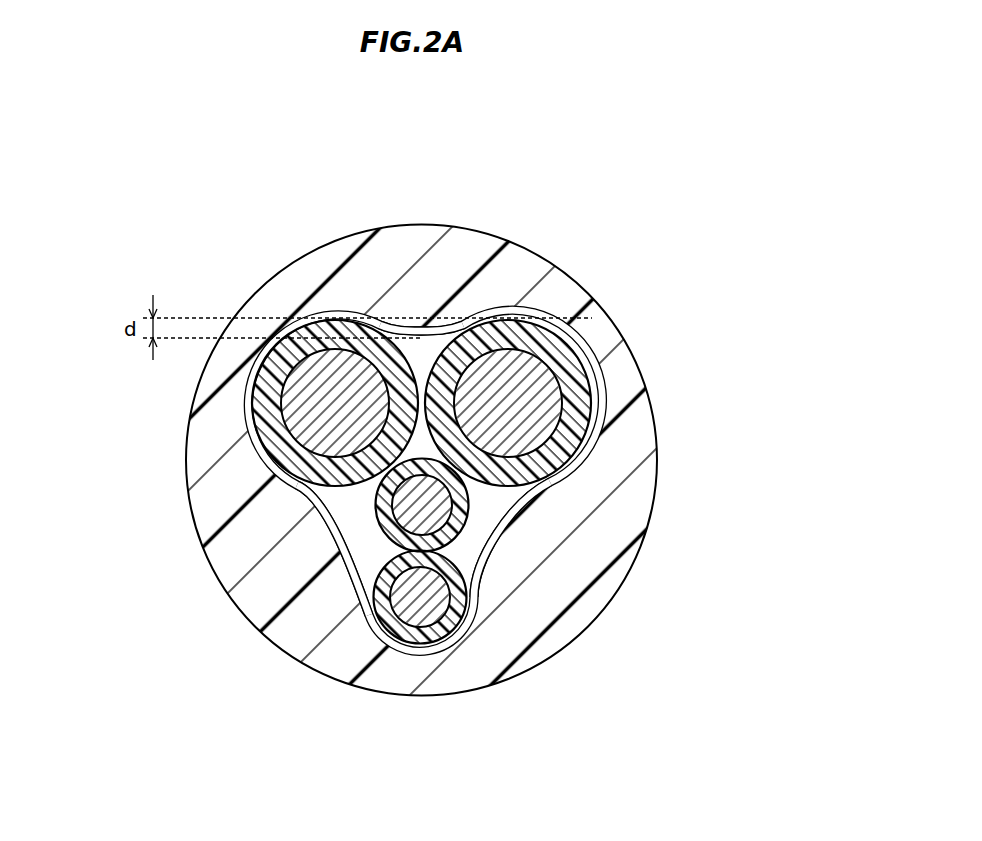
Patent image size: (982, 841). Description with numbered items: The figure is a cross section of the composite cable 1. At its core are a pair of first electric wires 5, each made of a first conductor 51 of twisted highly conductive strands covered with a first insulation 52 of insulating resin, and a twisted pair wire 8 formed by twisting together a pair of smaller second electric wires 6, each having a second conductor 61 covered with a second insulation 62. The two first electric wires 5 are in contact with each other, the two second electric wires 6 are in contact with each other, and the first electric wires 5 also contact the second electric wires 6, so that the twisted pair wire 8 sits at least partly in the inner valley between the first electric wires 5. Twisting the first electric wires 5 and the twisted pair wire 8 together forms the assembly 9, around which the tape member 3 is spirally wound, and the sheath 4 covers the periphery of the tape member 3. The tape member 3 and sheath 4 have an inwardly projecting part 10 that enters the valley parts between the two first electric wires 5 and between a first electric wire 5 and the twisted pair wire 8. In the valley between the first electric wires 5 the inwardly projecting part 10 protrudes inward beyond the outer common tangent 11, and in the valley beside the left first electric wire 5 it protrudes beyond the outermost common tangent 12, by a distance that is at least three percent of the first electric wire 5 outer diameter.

The composite cable 1 is at (262, 228).
The tape member 3 is at (590, 457).
The sheath 4 is at (640, 424).
The first electric wire 5 is at (415, 378).
The first conductor 51 is at (533, 370).
The first insulation 52 is at (587, 388).
The second electric wire 6 is at (460, 612).
The second conductor 61 is at (417, 617).
The second insulation 62 is at (435, 637).
The twisted pair wire 8 is at (453, 550).
The assembly 9 is at (500, 500).
The inwardly projecting part 10 is at (414, 326).
The common tangent 11 is at (208, 318).
The common tangent 12 is at (318, 522).